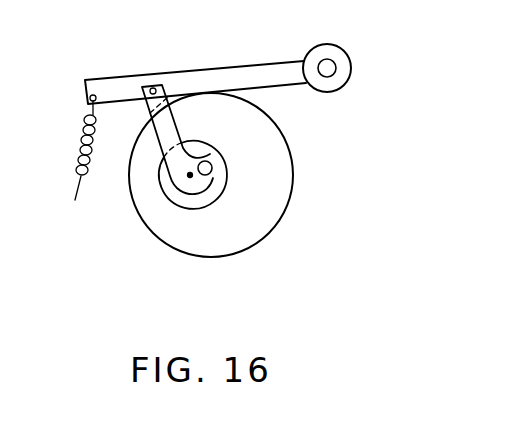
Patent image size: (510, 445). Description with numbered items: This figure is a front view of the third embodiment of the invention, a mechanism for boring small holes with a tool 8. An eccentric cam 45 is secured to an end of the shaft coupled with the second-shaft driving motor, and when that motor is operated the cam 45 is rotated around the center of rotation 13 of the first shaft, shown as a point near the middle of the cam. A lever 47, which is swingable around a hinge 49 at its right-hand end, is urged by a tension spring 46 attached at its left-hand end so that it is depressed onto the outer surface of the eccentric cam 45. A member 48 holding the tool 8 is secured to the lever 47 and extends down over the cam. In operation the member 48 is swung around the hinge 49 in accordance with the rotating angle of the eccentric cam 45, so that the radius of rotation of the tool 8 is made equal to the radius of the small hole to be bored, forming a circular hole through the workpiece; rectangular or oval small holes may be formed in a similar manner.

The tool 8 is at (212, 162).
The center of rotation 13 is at (190, 175).
The eccentric cam 45 is at (210, 258).
The tension spring 46 is at (82, 145).
The lever 47 is at (237, 72).
The member 48 is at (162, 129).
The hinge 49 is at (326, 60).